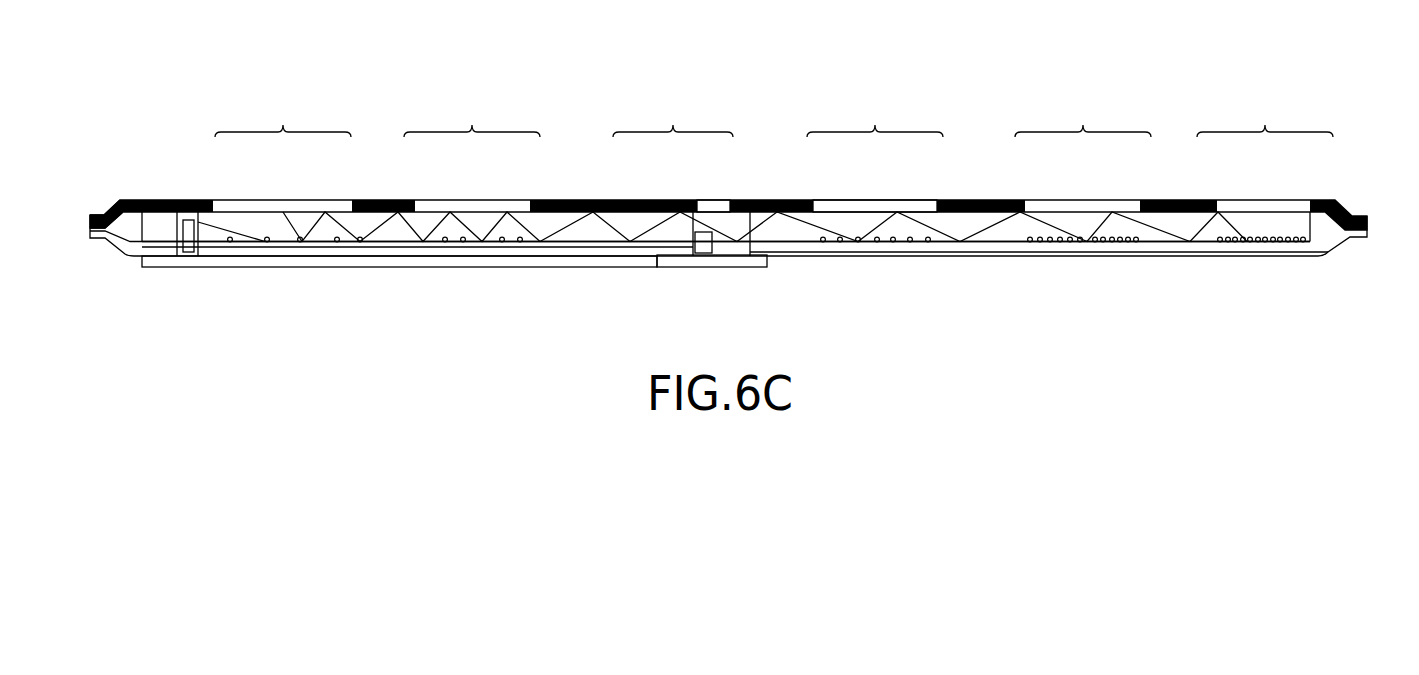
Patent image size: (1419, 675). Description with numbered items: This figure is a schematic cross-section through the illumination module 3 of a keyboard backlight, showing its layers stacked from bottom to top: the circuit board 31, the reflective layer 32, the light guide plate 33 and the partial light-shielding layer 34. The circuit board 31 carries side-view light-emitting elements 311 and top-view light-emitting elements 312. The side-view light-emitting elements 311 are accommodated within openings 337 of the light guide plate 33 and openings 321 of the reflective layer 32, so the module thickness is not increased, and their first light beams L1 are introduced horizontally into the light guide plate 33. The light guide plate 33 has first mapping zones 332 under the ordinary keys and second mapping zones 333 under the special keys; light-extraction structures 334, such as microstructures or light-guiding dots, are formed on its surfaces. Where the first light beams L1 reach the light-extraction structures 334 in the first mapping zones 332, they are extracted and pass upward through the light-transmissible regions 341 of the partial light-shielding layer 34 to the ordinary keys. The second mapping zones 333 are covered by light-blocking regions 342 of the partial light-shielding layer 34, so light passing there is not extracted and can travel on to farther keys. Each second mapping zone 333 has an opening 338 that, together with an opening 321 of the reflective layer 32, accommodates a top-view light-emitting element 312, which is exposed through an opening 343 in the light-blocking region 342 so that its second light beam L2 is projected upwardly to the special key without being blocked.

The illumination module 3 is at (1178, 72).
The circuit board 31 is at (522, 262).
The reflective layer 32 is at (1017, 250).
The light guide plate 33 is at (1300, 227).
The partial light-shielding layer 34 is at (1330, 198).
The side-view light-emitting element 311 is at (190, 247).
The top-view light-emitting element 312 is at (712, 250).
The opening of the reflective layer 321 is at (762, 252).
The first mapping zone 332 is at (774, 116).
The second mapping zone 333 is at (673, 116).
The light-extraction structure 334 is at (903, 245).
The opening of the light guide plate 337 is at (177, 228).
The opening of the second mapping zone 338 is at (688, 230).
The light-transmissible region 341 is at (832, 203).
The light-blocking region 342 is at (120, 202).
The opening of the light-blocking region 343 is at (722, 205).
The first light beam L1 is at (265, 242).
The second light beam L2 is at (703, 232).